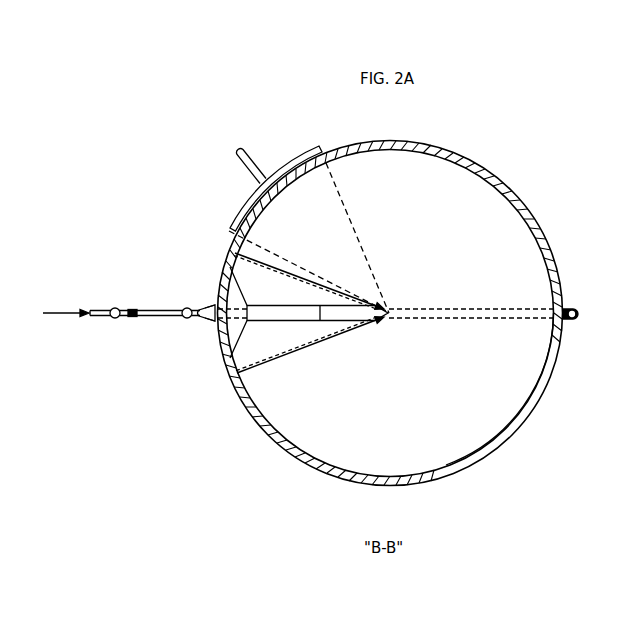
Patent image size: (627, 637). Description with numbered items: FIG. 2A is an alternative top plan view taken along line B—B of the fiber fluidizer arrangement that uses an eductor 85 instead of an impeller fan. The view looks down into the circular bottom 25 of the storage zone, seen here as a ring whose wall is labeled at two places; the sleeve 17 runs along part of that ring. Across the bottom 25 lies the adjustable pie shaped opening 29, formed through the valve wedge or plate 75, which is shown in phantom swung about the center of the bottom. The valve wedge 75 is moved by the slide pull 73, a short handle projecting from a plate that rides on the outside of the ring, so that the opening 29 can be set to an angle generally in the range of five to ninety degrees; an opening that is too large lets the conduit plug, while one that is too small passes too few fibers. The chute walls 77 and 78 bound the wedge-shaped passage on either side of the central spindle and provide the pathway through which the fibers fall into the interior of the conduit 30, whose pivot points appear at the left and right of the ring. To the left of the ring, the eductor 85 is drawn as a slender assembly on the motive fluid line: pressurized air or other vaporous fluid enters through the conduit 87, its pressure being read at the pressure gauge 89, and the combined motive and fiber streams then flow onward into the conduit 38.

The sleeve 17 is at (515, 431).
The bottom 25 is at (488, 218).
The adjustable pie shaped opening 29 is at (296, 280).
The conduit 30 is at (211, 322).
The conduit 38 is at (188, 307).
The slide pull 73 is at (248, 150).
The valve wedge or plate 75 is at (360, 240).
The chute wall 77 is at (274, 294).
The chute wall 78 is at (231, 268).
The eductor 85 is at (190, 318).
The conduit 87 is at (102, 308).
The pressure gauge 89 is at (137, 318).